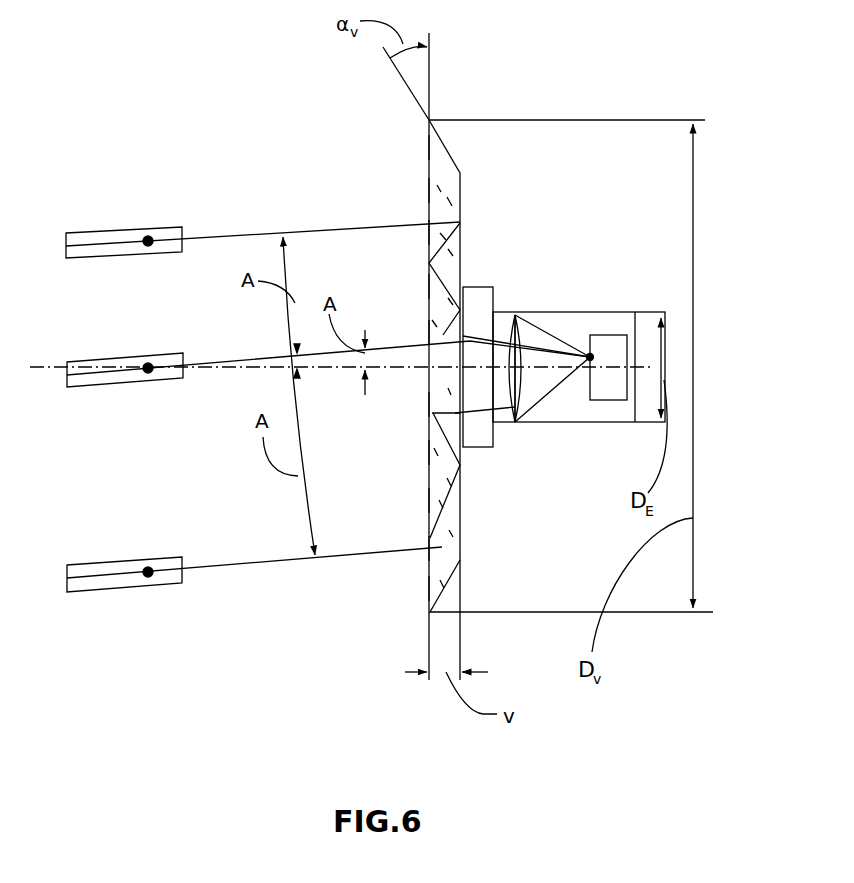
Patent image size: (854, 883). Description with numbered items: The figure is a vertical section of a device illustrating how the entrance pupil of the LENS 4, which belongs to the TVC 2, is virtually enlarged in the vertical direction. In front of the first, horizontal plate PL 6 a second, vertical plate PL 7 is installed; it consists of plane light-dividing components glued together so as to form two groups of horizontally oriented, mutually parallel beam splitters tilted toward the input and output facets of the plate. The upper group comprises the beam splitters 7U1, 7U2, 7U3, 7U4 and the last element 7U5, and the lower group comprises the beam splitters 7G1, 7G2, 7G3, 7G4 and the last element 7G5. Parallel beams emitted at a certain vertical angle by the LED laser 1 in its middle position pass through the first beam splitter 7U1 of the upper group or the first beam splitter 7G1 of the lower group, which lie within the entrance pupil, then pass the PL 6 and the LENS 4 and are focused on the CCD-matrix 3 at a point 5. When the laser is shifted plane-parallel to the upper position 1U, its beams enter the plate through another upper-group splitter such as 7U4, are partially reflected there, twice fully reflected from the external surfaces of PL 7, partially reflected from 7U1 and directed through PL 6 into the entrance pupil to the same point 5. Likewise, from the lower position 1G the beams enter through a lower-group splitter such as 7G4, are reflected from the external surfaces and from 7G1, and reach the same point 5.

The LED laser 1 is at (145, 387).
The LED laser in upper position 1U is at (145, 258).
The LED laser in lower position 1G is at (145, 592).
The TVC 2 is at (523, 424).
The CCD-matrix 3 is at (572, 346).
The LENS 4 is at (520, 320).
The point 5 is at (572, 374).
The first PL (horizontal) 6 is at (478, 288).
The second PL (vertical) 7 is at (462, 245).
The first beam splitter of upper group 7U1 is at (442, 333).
The second beam splitter of upper group 7U2 is at (443, 286).
The third beam splitter of upper group 7U3 is at (440, 232).
The fourth beam splitter of upper group 7U4 is at (440, 190).
The last beam splitter of upper group 7U5 is at (440, 147).
The first beam splitter of lower group 7G1 is at (440, 403).
The second beam splitter of lower group 7G2 is at (442, 452).
The third beam splitter of lower group 7G3 is at (442, 500).
The fourth beam splitter of lower group 7G4 is at (438, 548).
The last beam splitter of lower group 7G5 is at (437, 588).